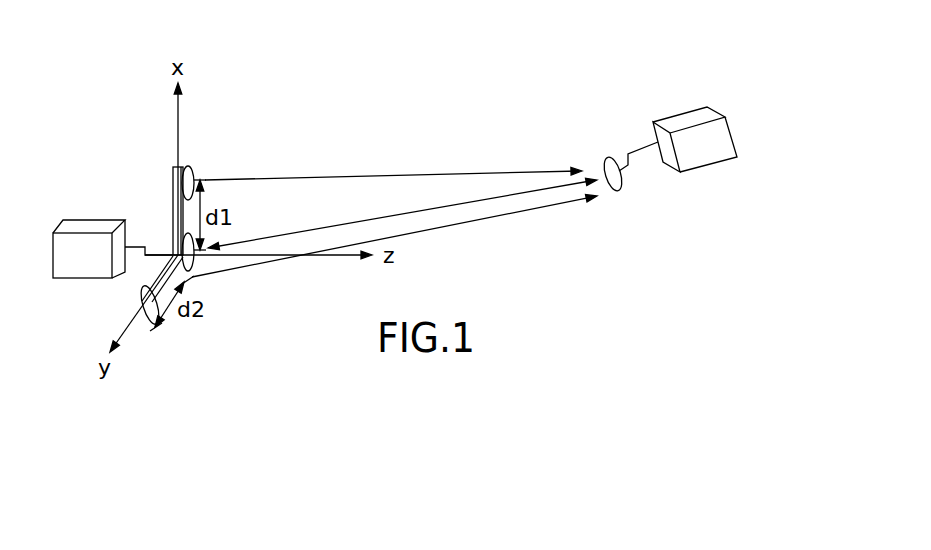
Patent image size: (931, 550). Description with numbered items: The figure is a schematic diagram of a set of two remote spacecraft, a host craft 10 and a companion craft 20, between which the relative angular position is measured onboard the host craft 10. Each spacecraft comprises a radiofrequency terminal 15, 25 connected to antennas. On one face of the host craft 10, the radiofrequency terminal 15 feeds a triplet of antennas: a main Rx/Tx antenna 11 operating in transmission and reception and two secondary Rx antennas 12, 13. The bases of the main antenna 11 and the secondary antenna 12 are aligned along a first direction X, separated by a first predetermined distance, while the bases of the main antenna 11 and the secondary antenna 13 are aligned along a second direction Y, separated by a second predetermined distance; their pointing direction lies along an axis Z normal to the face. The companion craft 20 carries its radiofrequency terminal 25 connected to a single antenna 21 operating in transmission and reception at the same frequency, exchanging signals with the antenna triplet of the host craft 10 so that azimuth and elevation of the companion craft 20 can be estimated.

The host craft 10 is at (123, 132).
The main Rx/Tx antenna 11 is at (197, 257).
The secondary Rx antenna 12 is at (188, 167).
The secondary Rx antenna 13 is at (153, 322).
The radiofrequency terminal 15 is at (82, 268).
The companion craft 20 is at (658, 72).
The antenna 21 is at (615, 190).
The radiofrequency terminal 25 is at (703, 172).